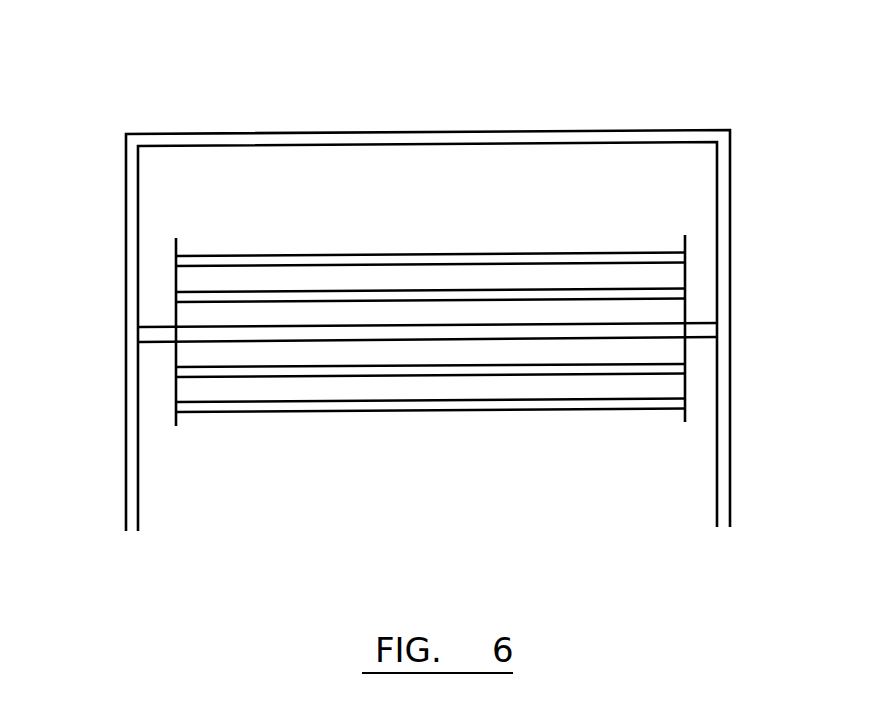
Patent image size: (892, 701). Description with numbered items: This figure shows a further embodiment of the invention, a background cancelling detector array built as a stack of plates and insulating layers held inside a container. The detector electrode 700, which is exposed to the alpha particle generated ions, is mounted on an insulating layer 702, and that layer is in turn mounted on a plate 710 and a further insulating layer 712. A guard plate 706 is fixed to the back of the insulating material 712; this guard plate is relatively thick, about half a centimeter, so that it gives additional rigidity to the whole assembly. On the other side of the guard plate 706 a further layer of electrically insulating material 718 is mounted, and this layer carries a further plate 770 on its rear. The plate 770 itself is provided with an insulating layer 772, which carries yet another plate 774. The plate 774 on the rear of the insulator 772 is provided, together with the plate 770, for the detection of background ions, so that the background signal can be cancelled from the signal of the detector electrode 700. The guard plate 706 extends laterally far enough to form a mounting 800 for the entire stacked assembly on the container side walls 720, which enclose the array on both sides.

The detector electrode 700 is at (417, 405).
The insulating layer 702 is at (497, 385).
The guard plate 706 is at (555, 335).
The plate 710 is at (282, 370).
The insulating layer 712 is at (362, 355).
The further layer of electrically insulating material 718 is at (593, 313).
The container side walls 720 is at (232, 141).
The further plate 770 is at (526, 295).
The insulating layer 772 is at (419, 277).
The further plate 774 is at (346, 256).
The mounting 800 is at (128, 339).